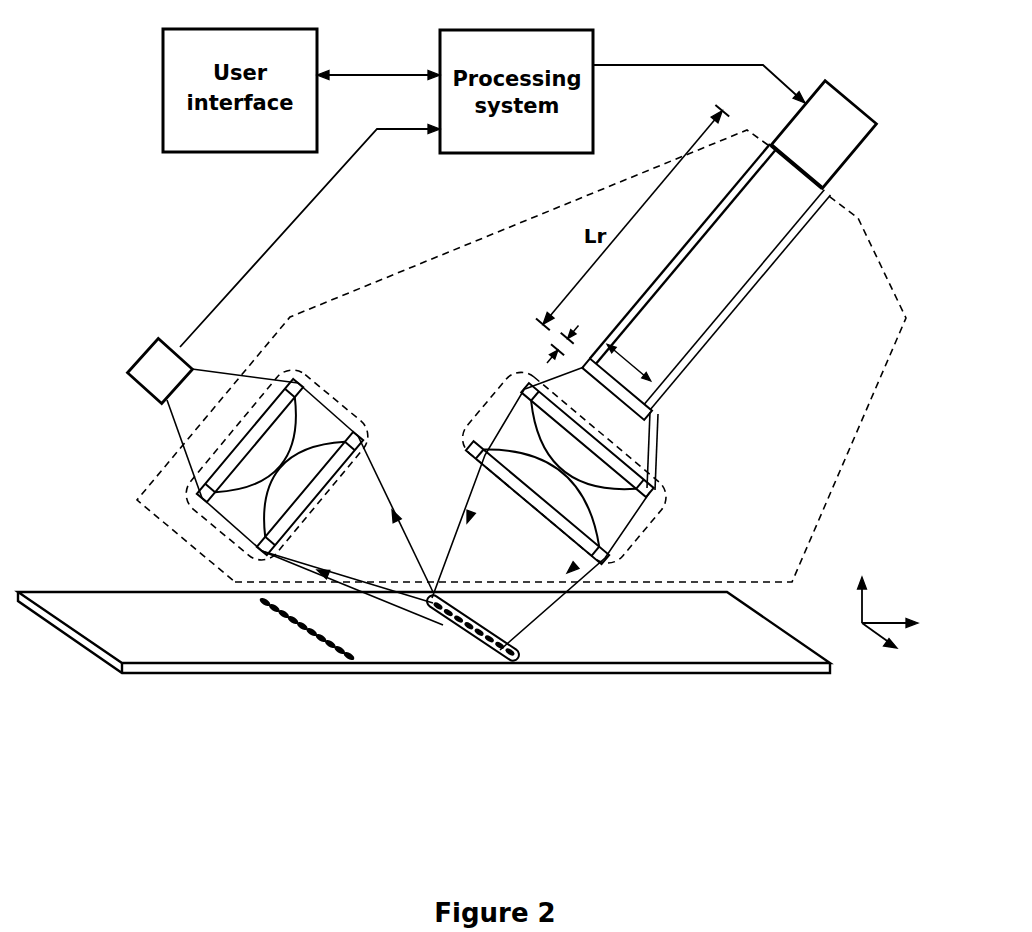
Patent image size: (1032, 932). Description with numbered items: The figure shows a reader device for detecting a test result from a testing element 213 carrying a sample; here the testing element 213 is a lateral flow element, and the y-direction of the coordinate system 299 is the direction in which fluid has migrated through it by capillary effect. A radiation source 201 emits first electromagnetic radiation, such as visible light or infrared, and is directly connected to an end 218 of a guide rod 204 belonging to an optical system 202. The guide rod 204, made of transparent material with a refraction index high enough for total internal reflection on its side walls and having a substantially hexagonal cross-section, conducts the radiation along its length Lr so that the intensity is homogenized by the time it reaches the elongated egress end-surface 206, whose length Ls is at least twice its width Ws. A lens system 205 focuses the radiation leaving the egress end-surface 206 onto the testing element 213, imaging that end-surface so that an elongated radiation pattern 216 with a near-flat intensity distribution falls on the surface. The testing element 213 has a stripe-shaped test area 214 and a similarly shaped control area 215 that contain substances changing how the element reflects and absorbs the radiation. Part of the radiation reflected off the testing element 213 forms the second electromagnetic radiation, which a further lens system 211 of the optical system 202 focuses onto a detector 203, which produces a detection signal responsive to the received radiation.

The radiation source 201 is at (848, 100).
The optical system 202 is at (415, 262).
The detector 203 is at (130, 370).
The guide rod 204 is at (712, 317).
The lens system 205 is at (647, 513).
The egress end-surface 206 is at (632, 400).
The lens system 211 is at (345, 392).
The testing element 213 is at (606, 635).
The test area 214 is at (330, 648).
The control area 215 is at (477, 638).
The radiation pattern 216 is at (443, 625).
The end 218 is at (824, 200).
The coordinate system 299 is at (874, 610).